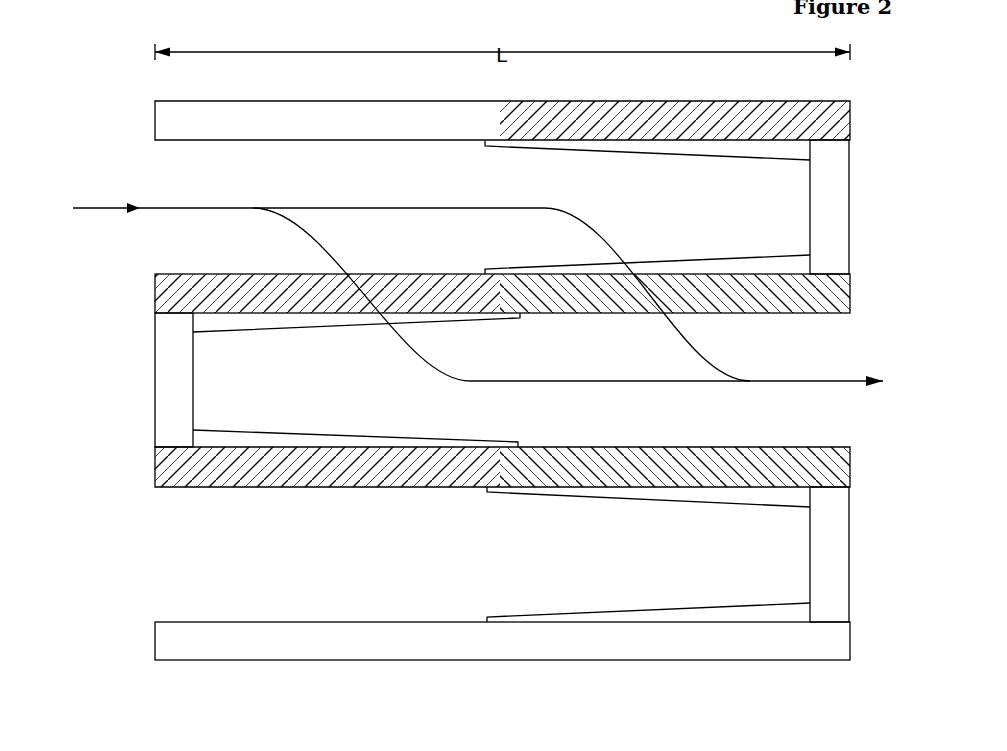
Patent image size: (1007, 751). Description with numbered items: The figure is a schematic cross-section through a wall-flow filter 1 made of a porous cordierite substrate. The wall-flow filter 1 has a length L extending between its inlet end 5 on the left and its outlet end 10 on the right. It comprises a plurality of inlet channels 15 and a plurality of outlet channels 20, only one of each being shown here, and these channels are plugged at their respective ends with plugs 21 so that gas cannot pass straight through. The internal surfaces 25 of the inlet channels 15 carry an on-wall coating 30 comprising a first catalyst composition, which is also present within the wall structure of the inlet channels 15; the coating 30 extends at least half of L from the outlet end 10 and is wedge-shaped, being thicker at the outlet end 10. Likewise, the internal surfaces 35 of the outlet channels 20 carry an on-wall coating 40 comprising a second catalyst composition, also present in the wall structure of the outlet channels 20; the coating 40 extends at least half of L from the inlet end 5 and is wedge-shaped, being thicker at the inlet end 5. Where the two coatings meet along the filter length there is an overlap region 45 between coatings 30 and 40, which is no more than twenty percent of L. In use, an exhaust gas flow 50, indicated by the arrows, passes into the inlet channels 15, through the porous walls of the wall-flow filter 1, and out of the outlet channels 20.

The wall-flow filter 1 is at (808, 100).
The inlet end 5 is at (155, 468).
The outlet end 10 is at (850, 464).
The inlet channels 15 is at (775, 577).
The outlet channels 20 is at (220, 391).
The plugs 21 is at (830, 238).
The internal surfaces of the inlet channels 25 is at (211, 141).
The on-wall coating 30 is at (701, 156).
The internal surfaces of the outlet channels 35 is at (338, 447).
The on-wall coating 40 is at (305, 328).
The overlap region 45 is at (502, 467).
The exhaust gas flow 50 is at (97, 207).